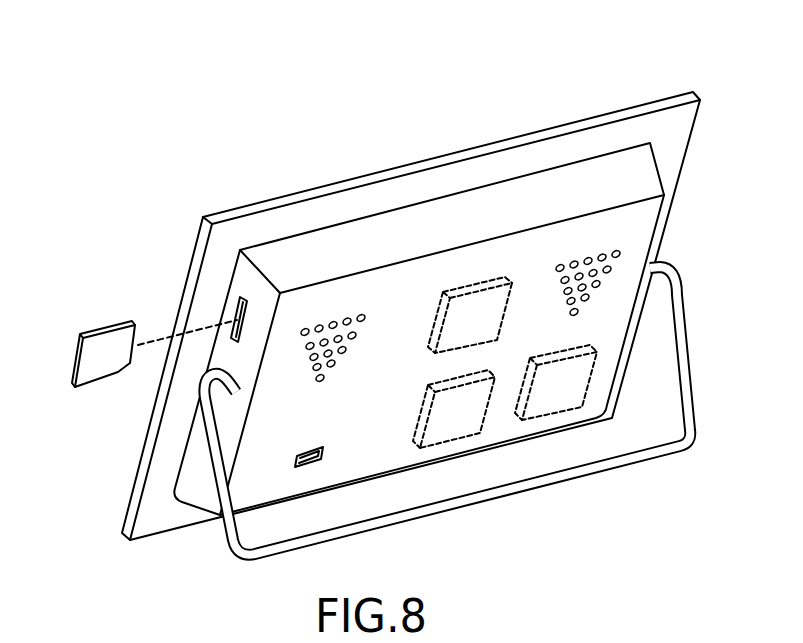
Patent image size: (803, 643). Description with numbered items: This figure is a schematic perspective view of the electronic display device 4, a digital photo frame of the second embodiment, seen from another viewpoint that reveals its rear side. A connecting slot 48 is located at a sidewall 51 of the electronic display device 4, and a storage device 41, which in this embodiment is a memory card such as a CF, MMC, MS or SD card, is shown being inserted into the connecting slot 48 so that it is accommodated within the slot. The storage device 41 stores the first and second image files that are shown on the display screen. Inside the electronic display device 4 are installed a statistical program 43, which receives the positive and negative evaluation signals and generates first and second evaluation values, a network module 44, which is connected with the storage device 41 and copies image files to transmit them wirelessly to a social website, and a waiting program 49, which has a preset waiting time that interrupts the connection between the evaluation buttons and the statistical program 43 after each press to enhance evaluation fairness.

The electronic display device 4 is at (313, 116).
The storage device 41 is at (111, 343).
The statistical program 43 is at (453, 335).
The network module 44 is at (438, 432).
The connecting slot 48 is at (242, 297).
The waiting program 49 is at (548, 405).
The sidewall 51 is at (250, 280).